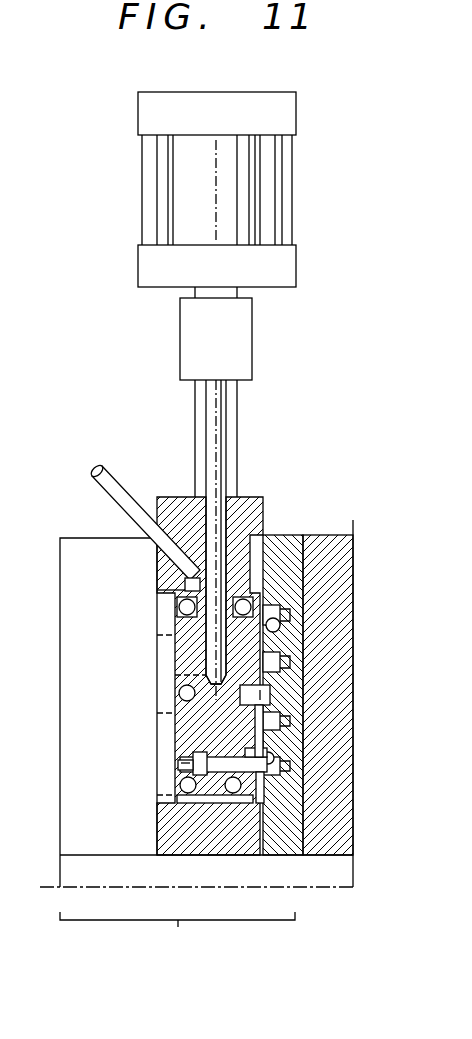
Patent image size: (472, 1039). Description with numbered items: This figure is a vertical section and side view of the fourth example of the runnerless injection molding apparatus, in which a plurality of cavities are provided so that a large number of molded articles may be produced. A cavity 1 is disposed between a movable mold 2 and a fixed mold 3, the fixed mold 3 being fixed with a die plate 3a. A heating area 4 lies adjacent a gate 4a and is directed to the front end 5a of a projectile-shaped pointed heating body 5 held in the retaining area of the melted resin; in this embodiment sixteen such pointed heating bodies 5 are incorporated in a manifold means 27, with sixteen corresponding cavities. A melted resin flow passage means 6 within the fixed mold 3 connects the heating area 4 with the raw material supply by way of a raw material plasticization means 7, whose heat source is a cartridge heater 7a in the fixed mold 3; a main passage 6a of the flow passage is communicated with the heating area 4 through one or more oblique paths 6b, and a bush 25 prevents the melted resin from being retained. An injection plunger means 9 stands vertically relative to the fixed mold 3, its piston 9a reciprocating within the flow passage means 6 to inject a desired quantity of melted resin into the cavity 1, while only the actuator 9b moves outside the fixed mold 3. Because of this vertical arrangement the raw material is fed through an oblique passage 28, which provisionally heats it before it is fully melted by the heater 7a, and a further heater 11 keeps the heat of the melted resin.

The cavity 1 is at (303, 651).
The movable mold 2 is at (305, 893).
The fixed mold 3 is at (177, 932).
The die plate 3a is at (60, 650).
The heating area 4 is at (262, 790).
The gate 4a is at (303, 743).
The pointed heating body 5 is at (298, 616).
The front end 5a is at (303, 784).
The melted resin flow passage means 6 is at (210, 696).
The main passage 6a is at (210, 744).
The oblique path 6b is at (177, 761).
The raw material plasticization means 7 is at (185, 581).
The cartridge heater 7a is at (170, 610).
The injection plunger means 9 is at (238, 340).
The piston 9a is at (237, 487).
The actuator 9b is at (246, 186).
The heater 11 is at (233, 791).
The bush 25 is at (297, 728).
The manifold means 27 is at (236, 712).
The oblique passage 28 is at (112, 474).